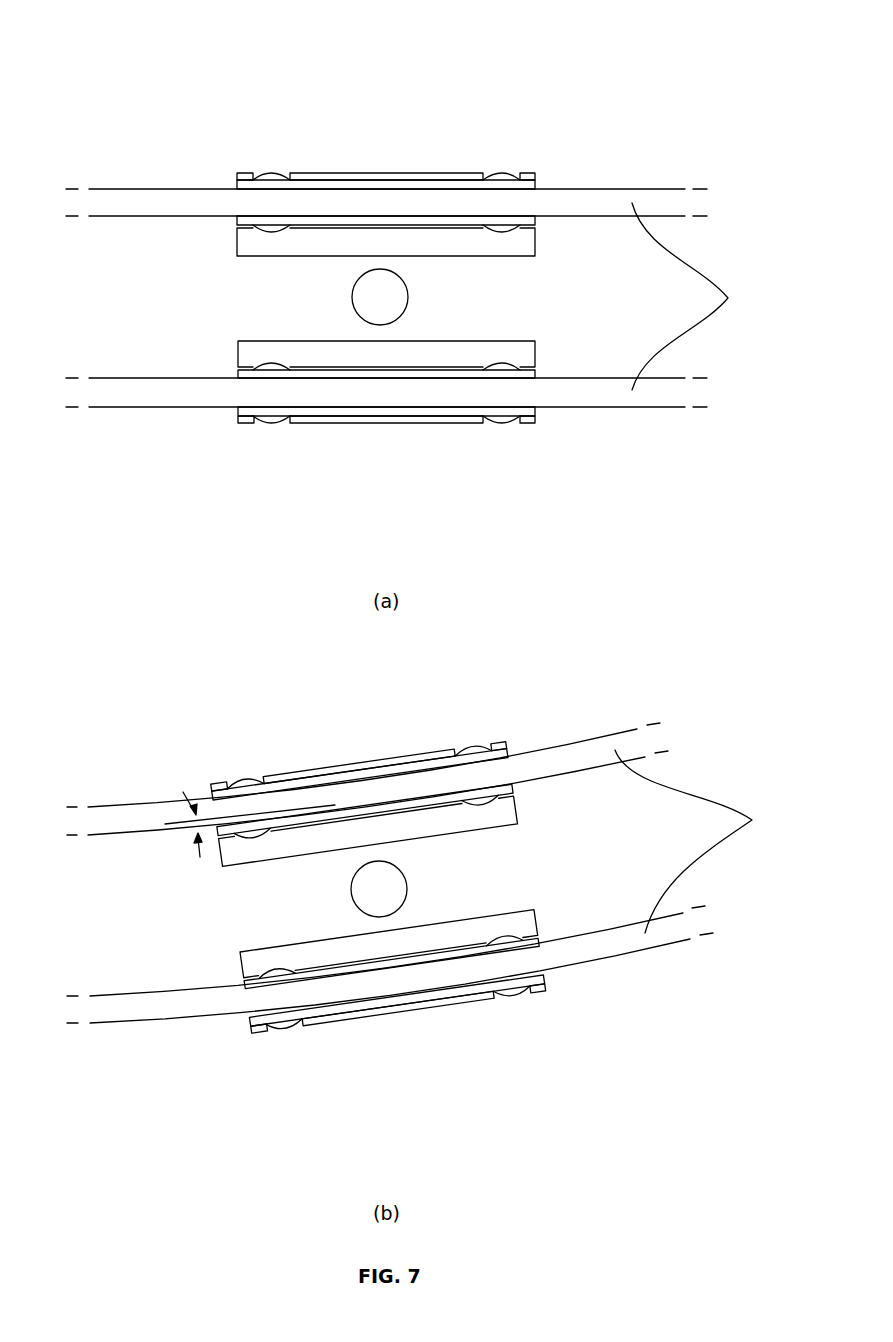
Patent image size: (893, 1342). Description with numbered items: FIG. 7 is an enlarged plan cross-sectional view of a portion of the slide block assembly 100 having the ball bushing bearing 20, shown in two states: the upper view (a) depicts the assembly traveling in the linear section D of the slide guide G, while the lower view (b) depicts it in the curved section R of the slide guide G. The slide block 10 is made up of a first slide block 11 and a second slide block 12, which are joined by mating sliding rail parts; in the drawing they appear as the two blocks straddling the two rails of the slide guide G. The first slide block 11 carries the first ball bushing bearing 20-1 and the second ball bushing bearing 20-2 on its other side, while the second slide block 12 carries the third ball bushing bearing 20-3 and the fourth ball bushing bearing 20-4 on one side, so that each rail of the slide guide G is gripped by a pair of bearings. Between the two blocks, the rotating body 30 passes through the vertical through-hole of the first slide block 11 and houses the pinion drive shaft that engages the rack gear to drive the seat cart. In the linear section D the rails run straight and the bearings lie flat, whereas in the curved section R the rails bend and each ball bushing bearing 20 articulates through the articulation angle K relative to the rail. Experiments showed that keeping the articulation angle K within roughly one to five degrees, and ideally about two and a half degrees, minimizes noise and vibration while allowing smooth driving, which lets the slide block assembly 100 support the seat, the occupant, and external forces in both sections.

The slide block assembly 100 is at (412, 592).
The slide block 10 is at (378, 637).
The first slide block 11 is at (390, 423).
The second slide block 12 is at (386, 173).
The ball bushing bearing 20 is at (378, 637).
The first ball bushing bearing 20-1 is at (502, 423).
The second ball bushing bearing 20-2 is at (272, 423).
The third ball bushing bearing 20-3 is at (502, 173).
The fourth ball bushing bearing 20-4 is at (273, 173).
The rotating body 30 is at (357, 295).
The slide guide G is at (693, 568).
The articulation angle K is at (250, 826).
The linear section D is at (112, 153).
The curved section R is at (134, 770).